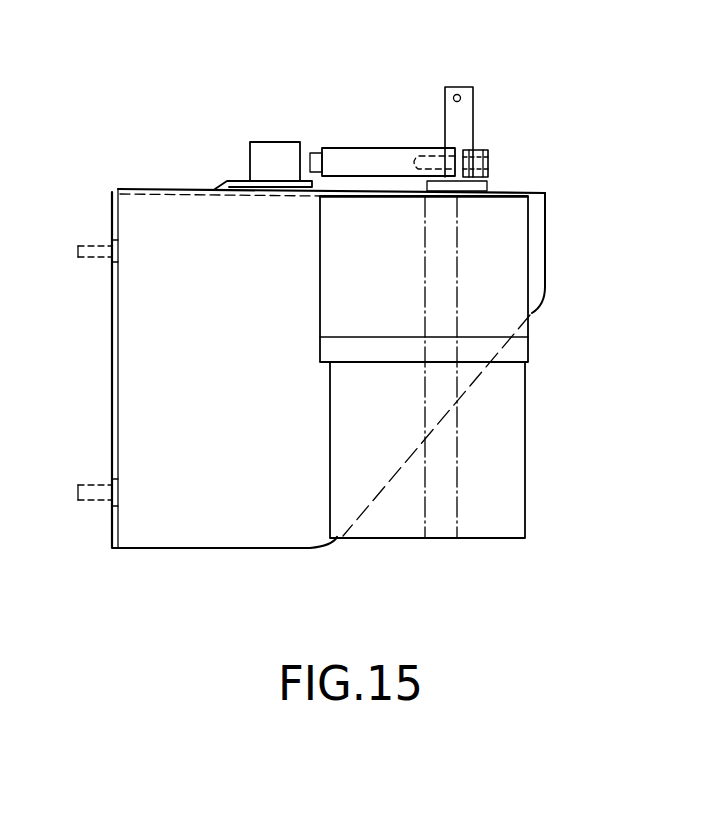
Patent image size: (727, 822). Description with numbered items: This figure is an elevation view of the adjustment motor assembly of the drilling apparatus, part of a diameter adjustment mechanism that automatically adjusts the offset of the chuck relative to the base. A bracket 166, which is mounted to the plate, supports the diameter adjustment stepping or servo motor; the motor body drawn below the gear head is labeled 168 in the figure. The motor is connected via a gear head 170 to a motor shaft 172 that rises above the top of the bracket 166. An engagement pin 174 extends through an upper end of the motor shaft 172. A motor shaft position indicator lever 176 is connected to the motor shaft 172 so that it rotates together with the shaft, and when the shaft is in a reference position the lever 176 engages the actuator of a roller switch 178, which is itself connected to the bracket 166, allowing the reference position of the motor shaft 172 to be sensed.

The bracket 166 is at (223, 533).
The motor 168 is at (497, 439).
The gear head 170 is at (495, 257).
The motor shaft 172 is at (462, 136).
The engagement pin 174 is at (460, 95).
The motor shaft position indicator lever 176 is at (383, 155).
The roller switch 178 is at (267, 152).